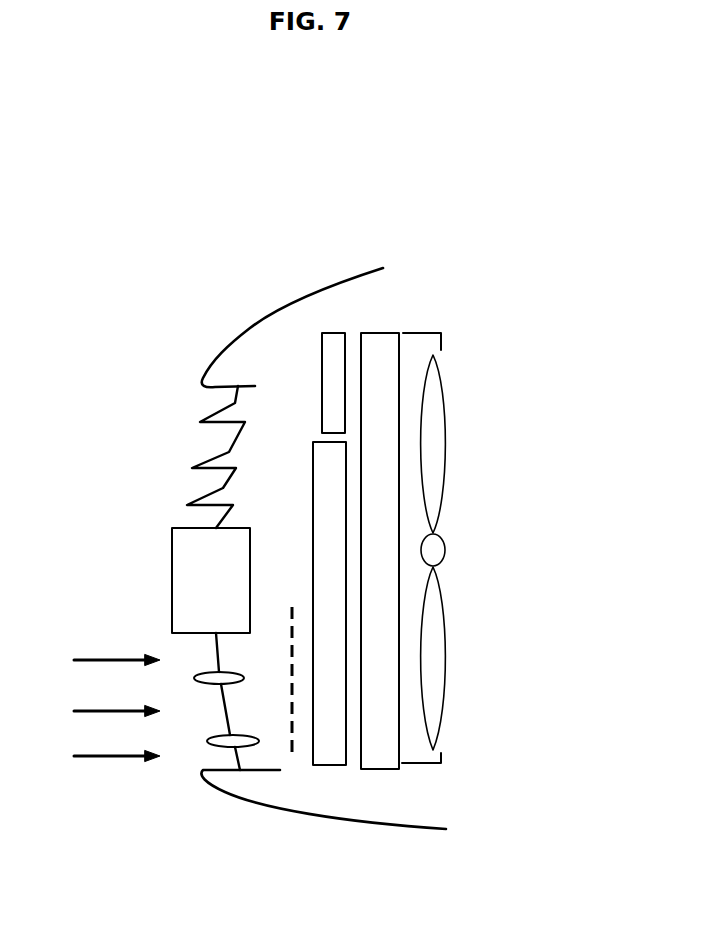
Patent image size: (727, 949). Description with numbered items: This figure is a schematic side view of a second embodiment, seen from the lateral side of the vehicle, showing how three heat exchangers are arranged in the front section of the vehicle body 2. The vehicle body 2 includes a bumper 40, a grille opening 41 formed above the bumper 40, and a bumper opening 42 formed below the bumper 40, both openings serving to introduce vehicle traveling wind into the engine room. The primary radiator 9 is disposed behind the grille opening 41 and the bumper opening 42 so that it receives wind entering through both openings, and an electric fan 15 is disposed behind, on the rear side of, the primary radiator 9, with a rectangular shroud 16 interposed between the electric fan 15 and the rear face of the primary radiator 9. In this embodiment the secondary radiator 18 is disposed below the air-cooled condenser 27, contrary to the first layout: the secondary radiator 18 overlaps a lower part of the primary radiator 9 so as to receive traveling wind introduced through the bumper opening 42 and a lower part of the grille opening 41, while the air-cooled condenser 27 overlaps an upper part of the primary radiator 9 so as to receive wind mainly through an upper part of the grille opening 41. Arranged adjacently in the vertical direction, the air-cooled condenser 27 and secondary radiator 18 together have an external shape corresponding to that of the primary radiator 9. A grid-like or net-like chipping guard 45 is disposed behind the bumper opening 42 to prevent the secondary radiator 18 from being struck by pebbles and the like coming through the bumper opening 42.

The vehicle body 2 is at (288, 305).
The primary radiator 9 is at (380, 350).
The electric fan 15 is at (432, 442).
The shroud 16 is at (427, 332).
The secondary radiator 18 is at (330, 755).
The air-cooled condenser 27 is at (331, 330).
The bumper 40 is at (172, 585).
The grille opening 41 is at (217, 437).
The bumper opening 42 is at (220, 715).
The chipping guard 45 is at (290, 745).